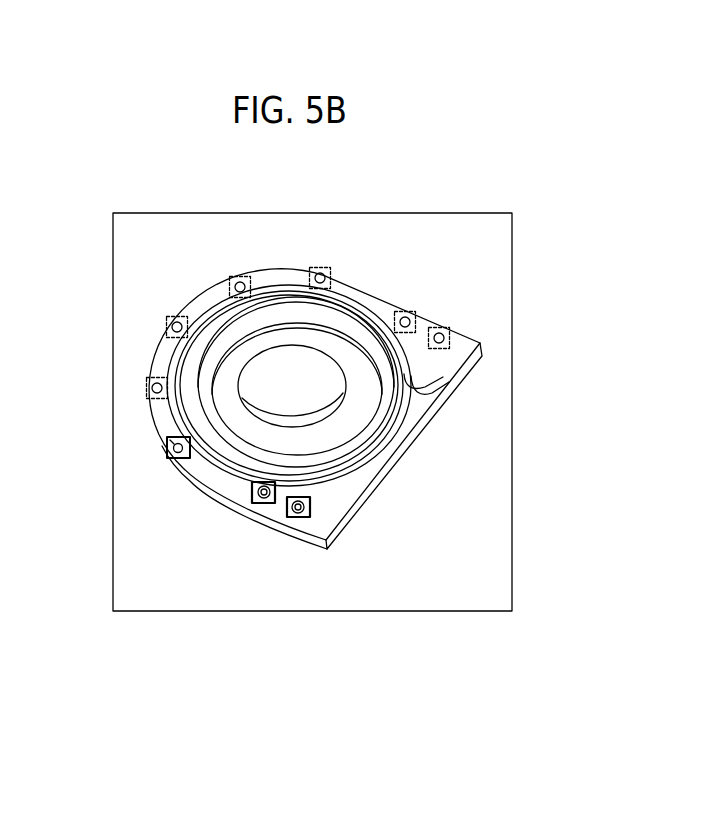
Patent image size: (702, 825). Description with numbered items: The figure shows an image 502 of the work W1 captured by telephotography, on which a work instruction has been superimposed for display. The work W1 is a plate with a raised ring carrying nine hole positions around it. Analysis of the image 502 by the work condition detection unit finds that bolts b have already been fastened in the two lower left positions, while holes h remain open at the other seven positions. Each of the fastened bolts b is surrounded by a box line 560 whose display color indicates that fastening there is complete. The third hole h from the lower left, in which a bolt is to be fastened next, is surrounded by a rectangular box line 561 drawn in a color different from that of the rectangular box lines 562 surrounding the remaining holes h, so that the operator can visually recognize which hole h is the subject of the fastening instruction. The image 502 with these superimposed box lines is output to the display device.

The image 502 is at (455, 616).
The work W1 is at (430, 411).
The hole h is at (397, 313).
The rectangular box line 562 is at (187, 312).
The rectangular box line 561 is at (167, 452).
The box line 560 is at (265, 504).
The bolt b is at (256, 505).